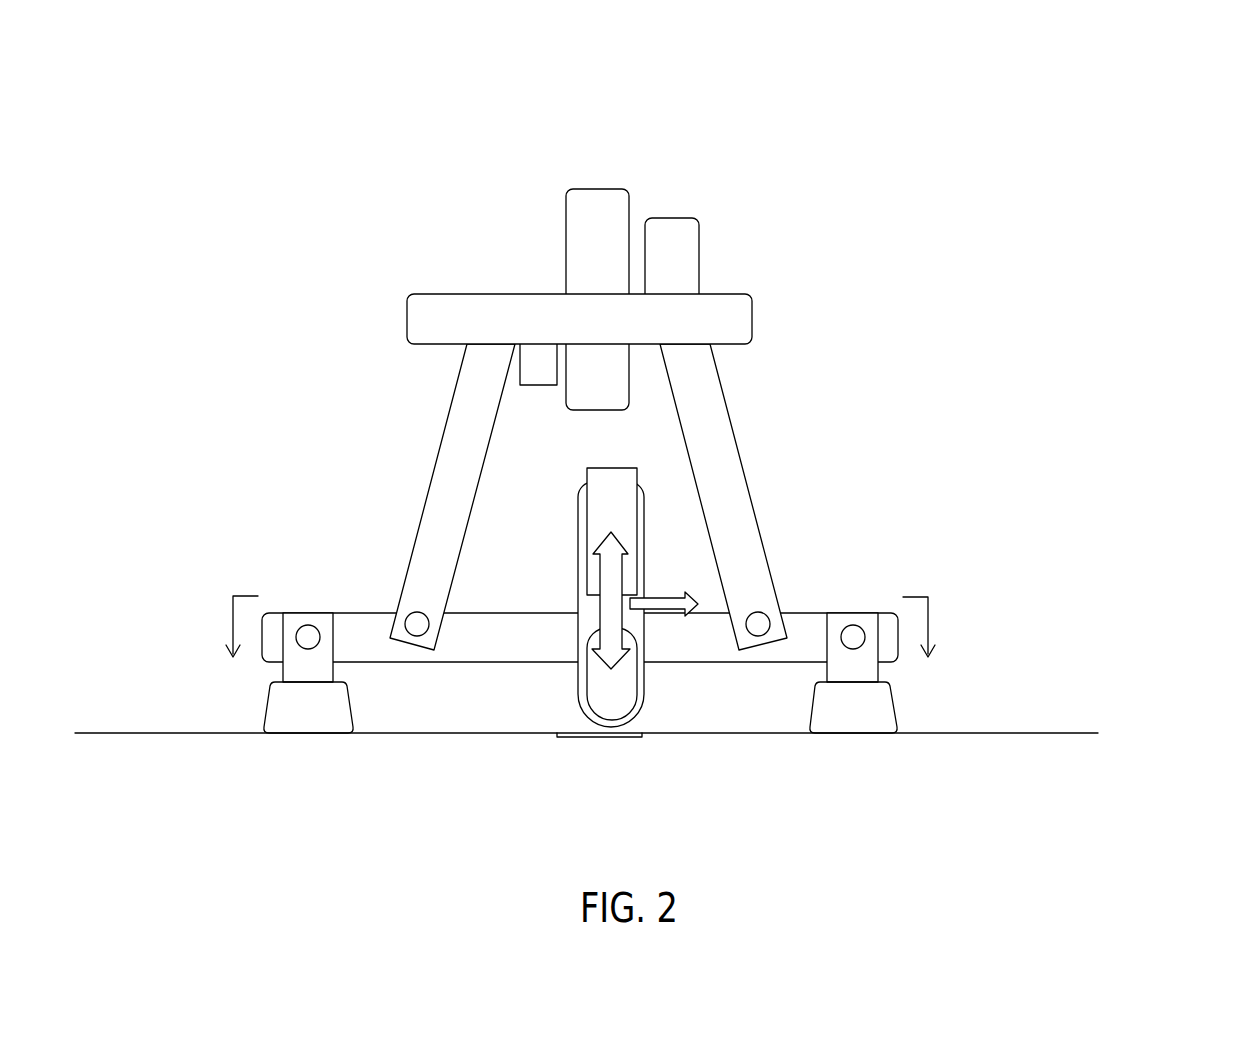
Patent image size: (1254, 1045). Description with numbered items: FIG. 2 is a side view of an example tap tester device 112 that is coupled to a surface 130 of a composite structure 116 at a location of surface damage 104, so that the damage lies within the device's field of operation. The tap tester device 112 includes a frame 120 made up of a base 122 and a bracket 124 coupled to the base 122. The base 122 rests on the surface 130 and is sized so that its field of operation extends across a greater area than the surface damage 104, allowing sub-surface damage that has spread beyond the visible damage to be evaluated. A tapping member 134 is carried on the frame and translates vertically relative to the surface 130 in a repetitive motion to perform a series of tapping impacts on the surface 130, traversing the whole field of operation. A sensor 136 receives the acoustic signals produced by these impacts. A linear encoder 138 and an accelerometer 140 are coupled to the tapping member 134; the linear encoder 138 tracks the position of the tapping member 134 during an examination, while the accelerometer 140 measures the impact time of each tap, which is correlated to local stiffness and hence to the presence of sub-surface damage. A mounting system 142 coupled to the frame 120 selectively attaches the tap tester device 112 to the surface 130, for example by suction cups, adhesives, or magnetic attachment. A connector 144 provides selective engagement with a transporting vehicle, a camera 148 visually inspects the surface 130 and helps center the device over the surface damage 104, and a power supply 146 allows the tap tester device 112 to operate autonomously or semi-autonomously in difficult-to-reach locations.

The surface damage 104 is at (629, 737).
The tap tester device 112 is at (843, 98).
The composite structure 116 is at (1113, 697).
The frame 120 is at (853, 380).
The base 122 is at (928, 583).
The bracket 124 is at (785, 265).
The surface 130 is at (1039, 733).
The tapping member 134 is at (648, 473).
The sensor 136 is at (530, 385).
The linear encoder 138 is at (587, 507).
The accelerometer 140 is at (623, 692).
The mounting system 142 is at (270, 705).
The connector 144 is at (566, 208).
The power supply 146 is at (699, 230).
The camera 148 is at (630, 378).